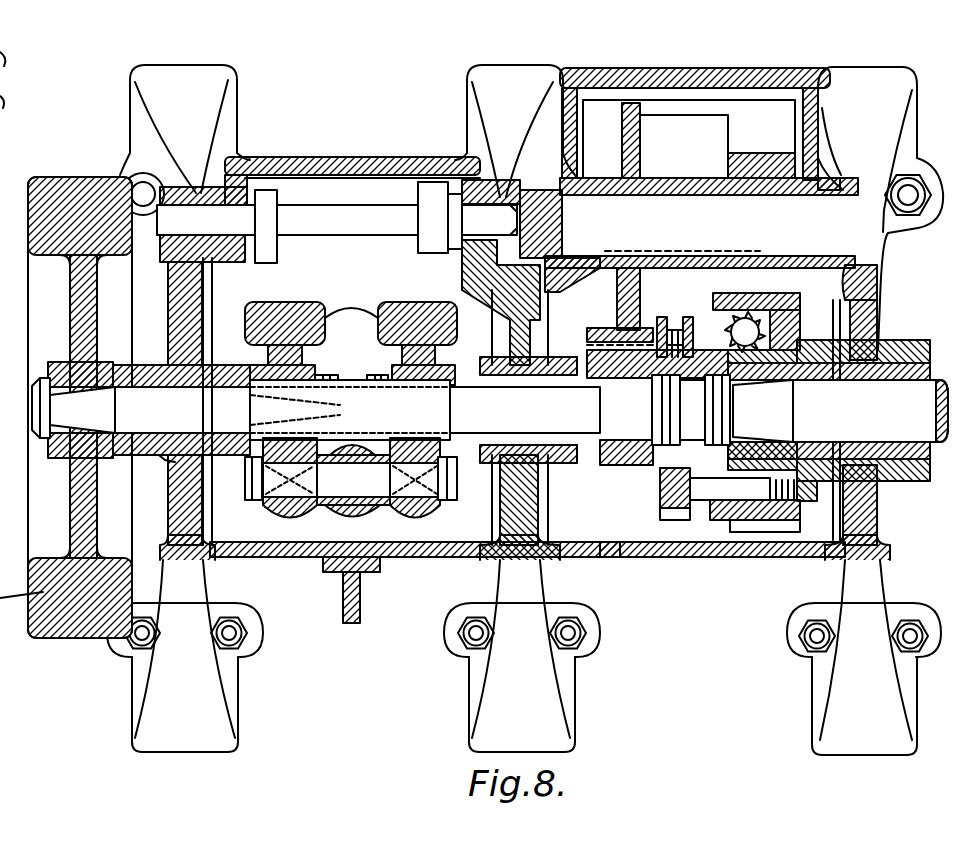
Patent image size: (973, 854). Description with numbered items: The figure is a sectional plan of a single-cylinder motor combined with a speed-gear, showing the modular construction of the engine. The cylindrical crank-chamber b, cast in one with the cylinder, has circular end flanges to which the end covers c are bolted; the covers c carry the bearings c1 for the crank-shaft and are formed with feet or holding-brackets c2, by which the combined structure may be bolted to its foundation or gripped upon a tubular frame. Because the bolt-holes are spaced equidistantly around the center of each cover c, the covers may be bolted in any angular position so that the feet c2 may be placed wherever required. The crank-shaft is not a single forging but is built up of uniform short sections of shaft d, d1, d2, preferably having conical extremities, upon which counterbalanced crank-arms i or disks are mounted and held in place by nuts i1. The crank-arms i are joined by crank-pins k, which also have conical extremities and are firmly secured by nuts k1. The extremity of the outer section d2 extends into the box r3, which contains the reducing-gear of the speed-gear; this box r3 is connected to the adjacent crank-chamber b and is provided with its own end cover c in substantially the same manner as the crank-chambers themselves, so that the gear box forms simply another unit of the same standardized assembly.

The end cover c is at (175, 328).
The bearing c1 is at (155, 473).
The feet or holding-brackets c2 is at (525, 410).
The crank-shaft section d is at (150, 410).
The crank-shaft section d1 is at (589, 407).
The crank-shaft section d2 is at (800, 410).
The counterbalanced crank-arm i is at (303, 305).
The nut i1 is at (379, 406).
The crank-pin k is at (351, 478).
The nut k1 is at (462, 481).
The crank-chamber b is at (424, 558).
The box r3 is at (723, 560).